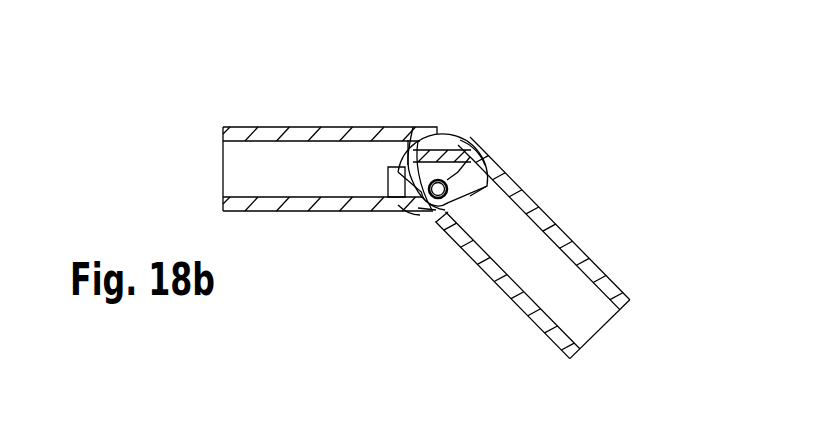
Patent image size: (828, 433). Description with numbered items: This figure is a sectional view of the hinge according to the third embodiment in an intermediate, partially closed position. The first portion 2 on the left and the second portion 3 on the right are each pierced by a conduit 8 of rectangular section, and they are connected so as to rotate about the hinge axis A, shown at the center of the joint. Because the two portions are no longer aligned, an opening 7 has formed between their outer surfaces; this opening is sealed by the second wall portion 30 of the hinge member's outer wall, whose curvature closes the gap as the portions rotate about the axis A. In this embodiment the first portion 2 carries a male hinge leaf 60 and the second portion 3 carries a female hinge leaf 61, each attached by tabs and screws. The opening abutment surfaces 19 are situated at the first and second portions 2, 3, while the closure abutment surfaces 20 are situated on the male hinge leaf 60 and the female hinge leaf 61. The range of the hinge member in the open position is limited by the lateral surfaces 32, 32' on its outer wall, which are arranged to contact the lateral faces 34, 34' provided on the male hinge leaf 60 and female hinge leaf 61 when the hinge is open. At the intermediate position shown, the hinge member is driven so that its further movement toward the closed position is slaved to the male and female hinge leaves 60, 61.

The first portion 2 is at (300, 120).
The second portion 3 is at (576, 213).
The opening 7 is at (444, 168).
The conduit 8 is at (257, 167).
The opening abutment surface 19 is at (446, 138).
The closure abutment surface 20 is at (418, 210).
The second wall portion 30 is at (470, 127).
The lateral surface 32 is at (354, 180).
The lateral surface 32' is at (515, 165).
The lateral face 34 is at (405, 138).
The lateral face 34' is at (530, 187).
The male hinge leaf 60 is at (398, 207).
The female hinge leaf 61 is at (436, 222).
The hinge axis A is at (409, 152).